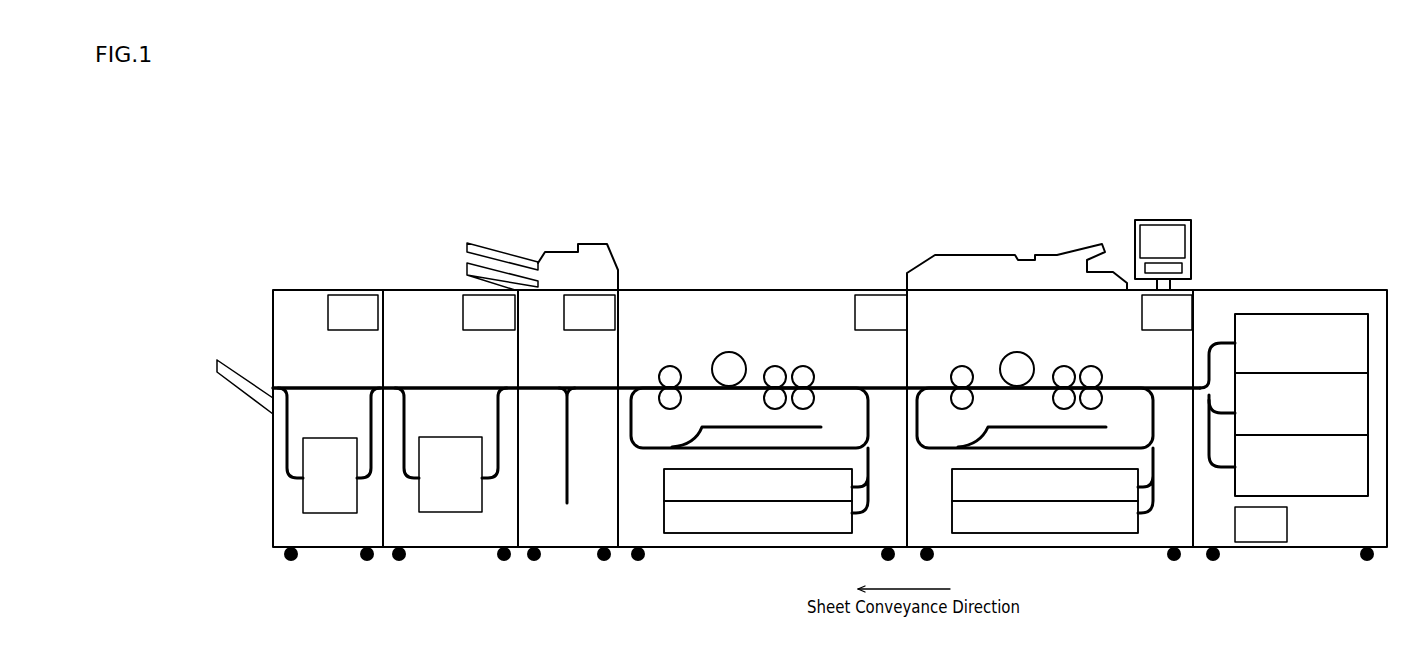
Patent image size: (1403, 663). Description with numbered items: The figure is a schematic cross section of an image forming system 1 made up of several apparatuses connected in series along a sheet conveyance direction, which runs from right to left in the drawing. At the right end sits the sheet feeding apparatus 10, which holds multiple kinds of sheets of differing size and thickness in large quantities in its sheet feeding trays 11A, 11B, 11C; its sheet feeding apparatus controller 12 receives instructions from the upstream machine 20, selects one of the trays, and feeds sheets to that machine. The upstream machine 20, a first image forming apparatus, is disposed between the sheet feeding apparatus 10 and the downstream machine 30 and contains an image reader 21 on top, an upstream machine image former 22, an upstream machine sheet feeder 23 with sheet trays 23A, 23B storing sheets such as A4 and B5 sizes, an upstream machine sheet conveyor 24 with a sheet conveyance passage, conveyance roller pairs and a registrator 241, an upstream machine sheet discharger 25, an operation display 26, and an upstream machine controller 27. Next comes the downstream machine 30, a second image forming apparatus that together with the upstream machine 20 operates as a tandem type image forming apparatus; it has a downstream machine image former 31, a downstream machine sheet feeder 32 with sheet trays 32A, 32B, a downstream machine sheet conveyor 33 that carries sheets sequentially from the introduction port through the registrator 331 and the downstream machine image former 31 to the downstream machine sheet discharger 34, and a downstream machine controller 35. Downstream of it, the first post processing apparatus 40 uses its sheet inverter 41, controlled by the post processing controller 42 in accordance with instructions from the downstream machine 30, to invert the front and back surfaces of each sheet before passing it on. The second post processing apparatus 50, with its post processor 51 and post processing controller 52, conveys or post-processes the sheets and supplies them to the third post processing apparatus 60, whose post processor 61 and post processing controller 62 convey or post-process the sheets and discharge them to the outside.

The image forming system 1 is at (226, 120).
The sheet feeding apparatus 10 is at (1278, 230).
The sheet feeding tray 11A is at (1277, 481).
The sheet feeding tray 11B is at (1277, 421).
The sheet feeding tray 11C is at (1277, 361).
The sheet feeding apparatus controller 12 is at (1248, 538).
The upstream machine 20 is at (1040, 225).
The image reader 21 is at (945, 258).
The upstream machine image former 22 is at (980, 360).
The upstream machine sheet feeder 23 is at (1023, 501).
The sheet tray 23A is at (1024, 529).
The sheet tray 23B is at (1024, 497).
The upstream machine sheet conveyor 24 is at (1142, 385).
The registrator 241 is at (1085, 360).
The upstream machine sheet discharger 25 is at (921, 367).
The operation display 26 is at (1165, 218).
The upstream machine controller 27 is at (1154, 325).
The downstream machine 30 is at (733, 225).
The downstream machine image former 31 is at (700, 356).
The downstream machine sheet feeder 32 is at (737, 501).
The sheet tray 32A is at (737, 529).
The sheet tray 32B is at (737, 497).
The downstream machine sheet conveyor 33 is at (855, 385).
The registrator 331 is at (798, 359).
The downstream machine sheet discharger 34 is at (633, 367).
The downstream machine controller 35 is at (868, 325).
The first post processing apparatus 40 is at (560, 232).
The sheet inverter 41 is at (582, 477).
The post processing controller 42 is at (576, 325).
The second post processing apparatus 50 is at (418, 232).
The post processor 51 is at (437, 486).
The post processing controller 52 is at (476, 325).
The third post processing apparatus 60 is at (315, 232).
The post processor 61 is at (317, 486).
The post processing controller 62 is at (340, 325).